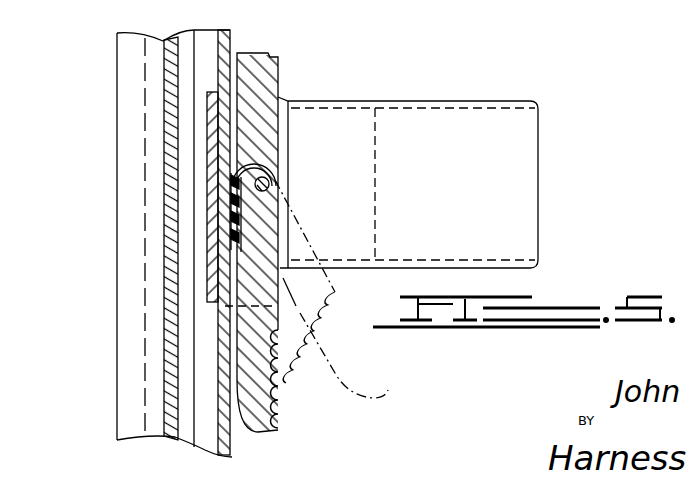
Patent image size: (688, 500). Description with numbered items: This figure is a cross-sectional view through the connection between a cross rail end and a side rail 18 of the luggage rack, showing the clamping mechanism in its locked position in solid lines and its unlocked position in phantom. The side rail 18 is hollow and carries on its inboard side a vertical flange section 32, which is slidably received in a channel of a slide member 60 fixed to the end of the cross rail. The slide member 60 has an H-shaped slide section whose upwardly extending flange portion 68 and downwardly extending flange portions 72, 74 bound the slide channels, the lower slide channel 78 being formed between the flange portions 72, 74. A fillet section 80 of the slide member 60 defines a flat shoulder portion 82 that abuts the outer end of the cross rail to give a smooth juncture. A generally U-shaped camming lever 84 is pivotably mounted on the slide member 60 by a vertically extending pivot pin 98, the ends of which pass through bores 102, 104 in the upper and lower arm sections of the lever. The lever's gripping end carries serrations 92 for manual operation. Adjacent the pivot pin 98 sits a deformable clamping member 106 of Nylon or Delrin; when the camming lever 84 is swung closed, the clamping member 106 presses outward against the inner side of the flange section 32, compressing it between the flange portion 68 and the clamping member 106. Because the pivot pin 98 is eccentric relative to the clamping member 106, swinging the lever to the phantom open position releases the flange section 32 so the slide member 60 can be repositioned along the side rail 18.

The side rail 18 is at (113, 56).
The flange section 32 is at (232, 38).
The flange portion 68 is at (135, 197).
The clamping member 106 is at (226, 210).
The fillet section 80 is at (278, 94).
The shoulder portion 82 is at (289, 127).
The slide member 60 is at (378, 136).
The bore 102 is at (271, 174).
The pivot pin 98 is at (264, 190).
The camming lever 84 is at (284, 303).
The serrations 92 is at (280, 377).
The flange portion 72 is at (352, 0).
The flange portion 74 is at (362, 9).
The bore 104 is at (448, 9).
The slide channel 78 is at (370, 32).